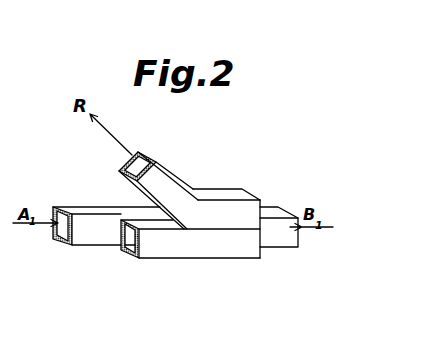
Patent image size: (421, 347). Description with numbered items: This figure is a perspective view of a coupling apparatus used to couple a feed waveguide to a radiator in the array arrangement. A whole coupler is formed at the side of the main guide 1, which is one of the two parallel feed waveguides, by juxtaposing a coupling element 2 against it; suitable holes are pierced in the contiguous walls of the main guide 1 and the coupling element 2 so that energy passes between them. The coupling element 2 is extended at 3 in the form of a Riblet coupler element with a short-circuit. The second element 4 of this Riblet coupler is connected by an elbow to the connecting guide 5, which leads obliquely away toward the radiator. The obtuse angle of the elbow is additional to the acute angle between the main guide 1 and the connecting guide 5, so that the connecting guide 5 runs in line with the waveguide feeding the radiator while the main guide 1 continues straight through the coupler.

The main guide 1 is at (87, 238).
The coupling element 2 is at (173, 250).
The Riblet coupler element with short-circuit 3 is at (240, 247).
The second element 4 is at (219, 218).
The connecting guide 5 is at (157, 177).